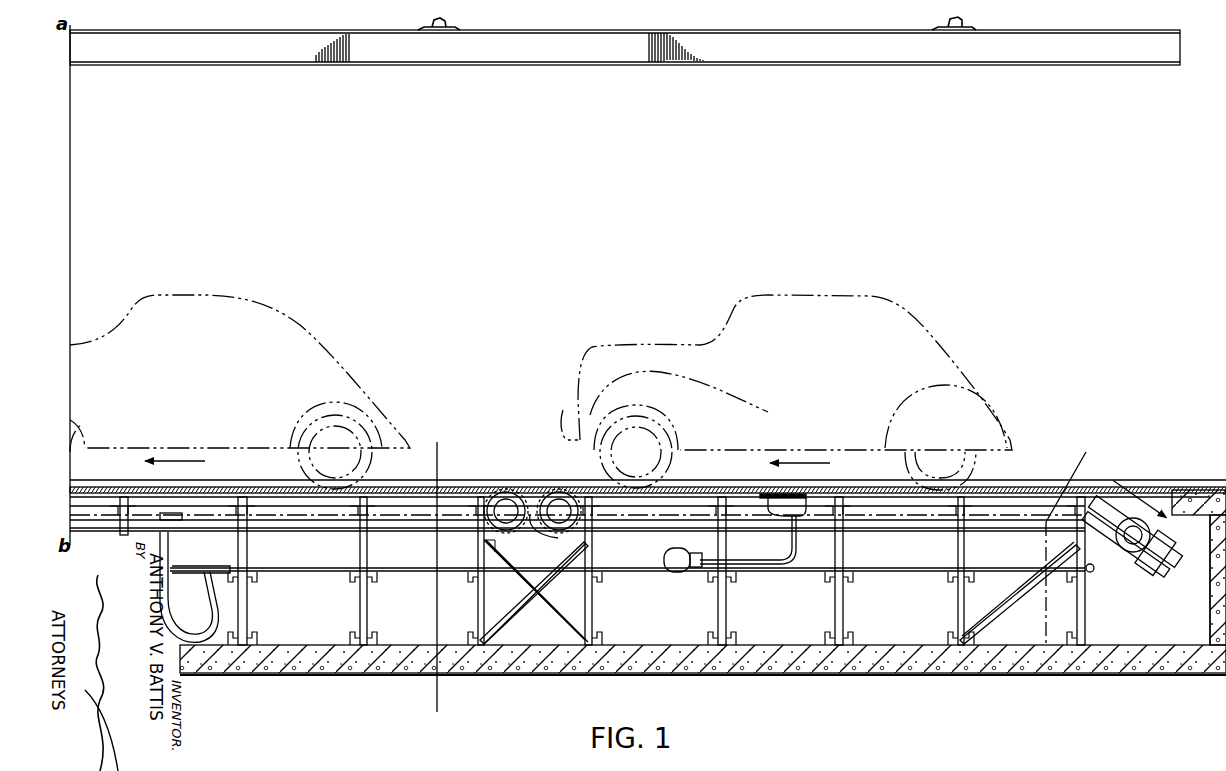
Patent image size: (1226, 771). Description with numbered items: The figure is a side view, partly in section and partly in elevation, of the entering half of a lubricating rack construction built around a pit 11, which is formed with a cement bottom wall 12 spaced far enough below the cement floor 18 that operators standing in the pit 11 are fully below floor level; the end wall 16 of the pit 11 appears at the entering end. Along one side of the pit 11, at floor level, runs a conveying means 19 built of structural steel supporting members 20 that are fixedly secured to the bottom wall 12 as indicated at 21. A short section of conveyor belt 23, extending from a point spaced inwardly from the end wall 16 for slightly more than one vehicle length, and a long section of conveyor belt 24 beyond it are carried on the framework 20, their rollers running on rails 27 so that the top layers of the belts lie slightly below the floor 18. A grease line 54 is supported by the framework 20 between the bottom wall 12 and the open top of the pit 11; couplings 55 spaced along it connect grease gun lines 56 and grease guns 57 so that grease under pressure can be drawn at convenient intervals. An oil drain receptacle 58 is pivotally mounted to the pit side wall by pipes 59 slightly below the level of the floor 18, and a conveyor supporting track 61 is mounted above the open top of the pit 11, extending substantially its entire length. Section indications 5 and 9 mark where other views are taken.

The conveyor supporting track 61 is at (600, 52).
The grease gun 57 is at (187, 512).
The long section of conveyor belt 24 is at (388, 484).
The short section of conveyor belt 23 is at (577, 483).
The section line 5 is at (443, 450).
The section line 9 is at (1055, 442).
The cement floor 18 is at (1196, 496).
The cement end wall 16 is at (1218, 492).
The coupling 55 is at (200, 568).
The grease gun line 56 is at (195, 612).
The grease line 54 is at (285, 575).
The floor securement of framework 21 is at (349, 643).
The rail 27 is at (877, 503).
The oil drain receptacle 58 is at (785, 512).
The pipe 59 is at (704, 565).
The structural steel supporting member 20 is at (835, 597).
The conveying means 19 is at (848, 550).
The pit 11 is at (798, 630).
The cement bottom wall 12 is at (1053, 579).